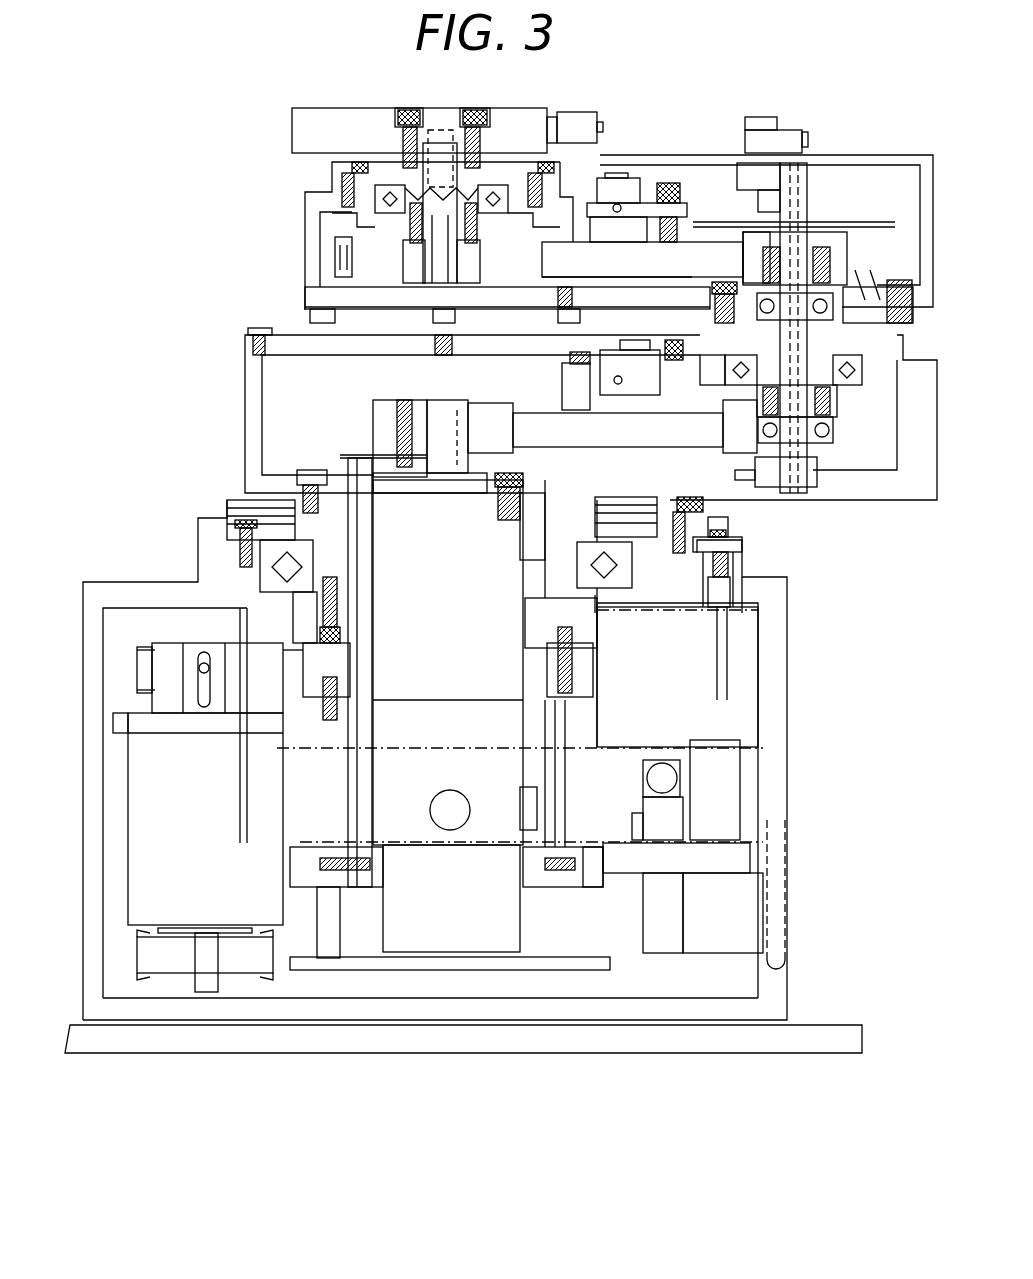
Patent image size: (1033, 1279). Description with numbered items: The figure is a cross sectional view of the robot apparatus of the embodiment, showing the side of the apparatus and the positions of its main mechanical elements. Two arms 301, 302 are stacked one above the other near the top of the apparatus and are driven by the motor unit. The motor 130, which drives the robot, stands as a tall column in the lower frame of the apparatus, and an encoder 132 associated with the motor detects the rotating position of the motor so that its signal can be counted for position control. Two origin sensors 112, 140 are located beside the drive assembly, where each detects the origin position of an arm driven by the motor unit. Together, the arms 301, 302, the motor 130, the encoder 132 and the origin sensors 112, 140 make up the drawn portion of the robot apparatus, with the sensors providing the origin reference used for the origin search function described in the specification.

The arm 302 is at (577, 300).
The arm 301 is at (554, 444).
The origin sensor 140 is at (345, 478).
The origin sensor 112 is at (748, 608).
The motor 130 is at (412, 793).
The encoder 132 is at (456, 903).